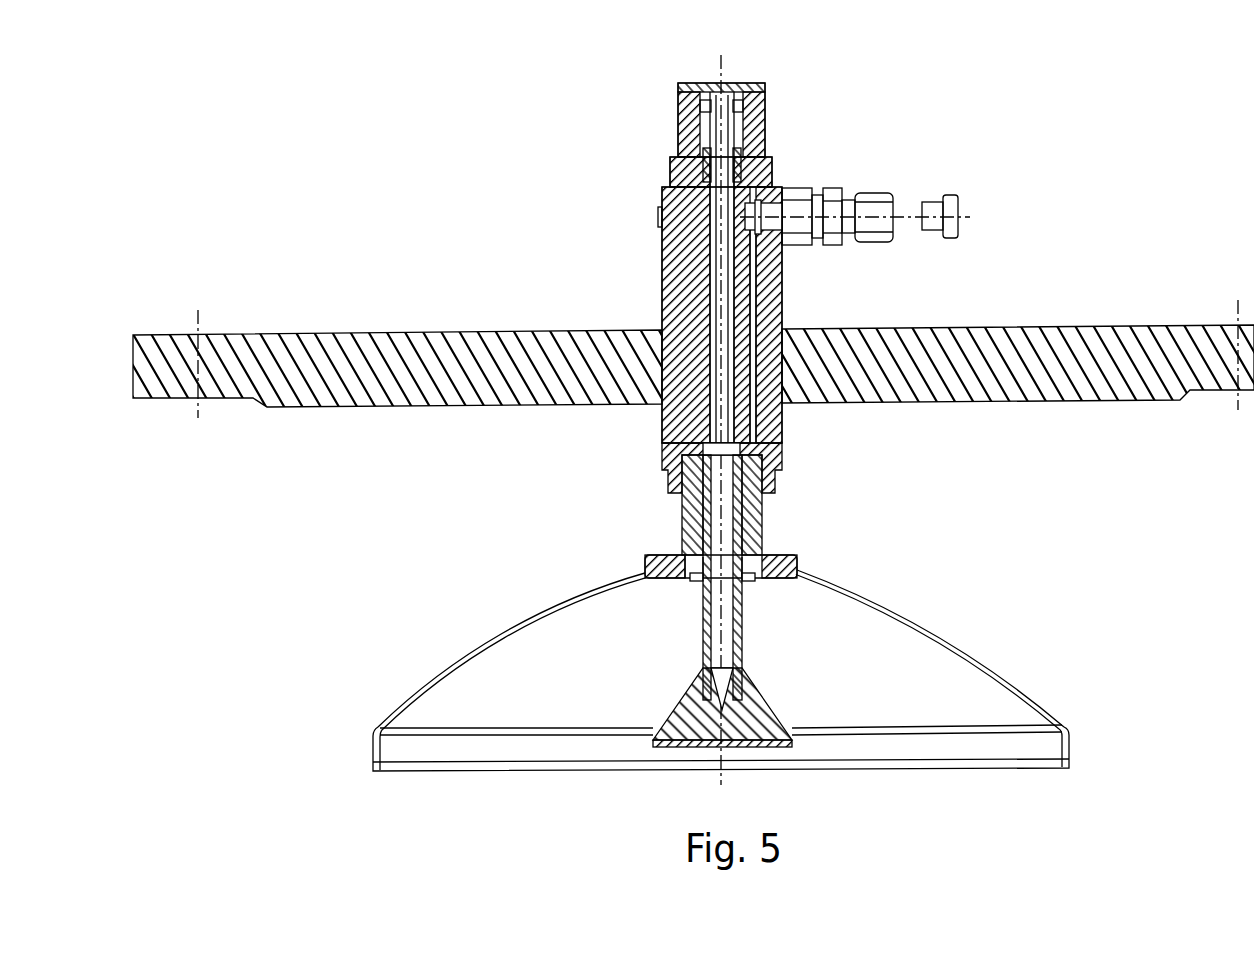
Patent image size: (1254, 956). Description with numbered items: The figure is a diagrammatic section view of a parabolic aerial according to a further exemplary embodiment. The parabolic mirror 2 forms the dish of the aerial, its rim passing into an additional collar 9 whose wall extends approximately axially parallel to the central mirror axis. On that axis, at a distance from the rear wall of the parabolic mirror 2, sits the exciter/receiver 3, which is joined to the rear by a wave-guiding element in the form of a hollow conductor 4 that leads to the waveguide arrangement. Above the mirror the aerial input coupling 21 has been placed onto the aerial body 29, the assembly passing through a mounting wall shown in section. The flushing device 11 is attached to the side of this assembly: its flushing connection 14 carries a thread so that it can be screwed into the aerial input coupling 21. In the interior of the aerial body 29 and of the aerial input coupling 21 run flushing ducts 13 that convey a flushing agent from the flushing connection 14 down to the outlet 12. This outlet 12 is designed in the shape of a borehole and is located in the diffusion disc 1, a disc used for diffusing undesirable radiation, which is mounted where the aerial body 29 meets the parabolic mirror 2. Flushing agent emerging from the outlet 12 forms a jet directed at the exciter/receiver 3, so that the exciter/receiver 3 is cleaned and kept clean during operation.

The diffusion disc 1 is at (797, 572).
The parabolic mirror 2 is at (1018, 677).
The exciter/receiver 3 is at (778, 716).
The hollow conductor 4 is at (745, 638).
The collar 9 is at (1075, 745).
The flushing device 11 is at (872, 140).
The flushing outlet 12 is at (697, 582).
The flushing duct 13 is at (760, 510).
The flushing connection 14 is at (880, 198).
The aerial input coupling 21 is at (592, 203).
The aerial body 29 is at (683, 500).